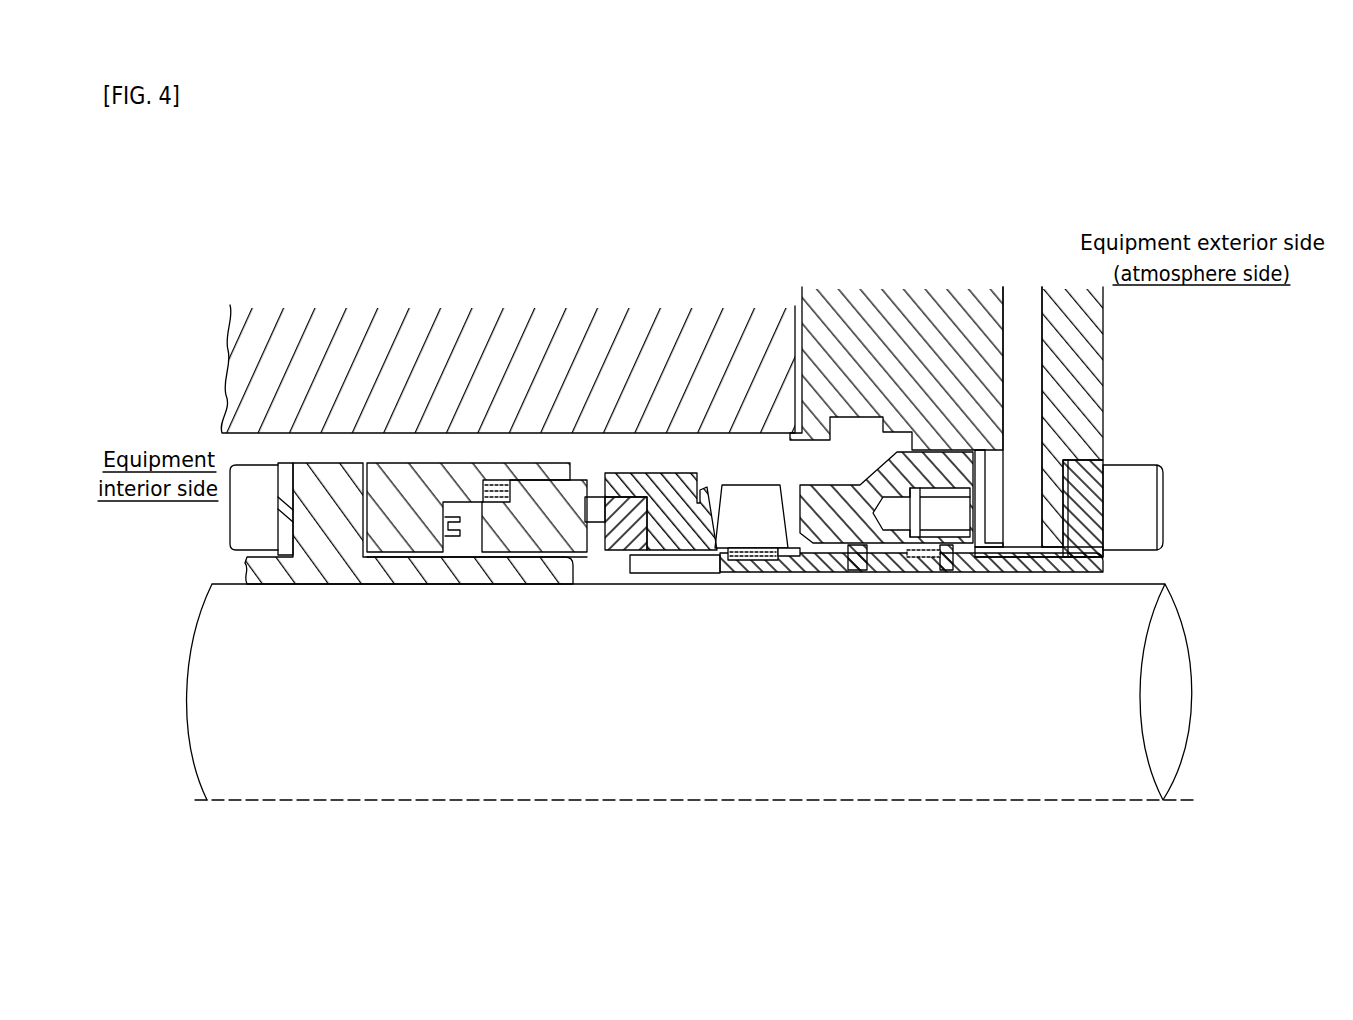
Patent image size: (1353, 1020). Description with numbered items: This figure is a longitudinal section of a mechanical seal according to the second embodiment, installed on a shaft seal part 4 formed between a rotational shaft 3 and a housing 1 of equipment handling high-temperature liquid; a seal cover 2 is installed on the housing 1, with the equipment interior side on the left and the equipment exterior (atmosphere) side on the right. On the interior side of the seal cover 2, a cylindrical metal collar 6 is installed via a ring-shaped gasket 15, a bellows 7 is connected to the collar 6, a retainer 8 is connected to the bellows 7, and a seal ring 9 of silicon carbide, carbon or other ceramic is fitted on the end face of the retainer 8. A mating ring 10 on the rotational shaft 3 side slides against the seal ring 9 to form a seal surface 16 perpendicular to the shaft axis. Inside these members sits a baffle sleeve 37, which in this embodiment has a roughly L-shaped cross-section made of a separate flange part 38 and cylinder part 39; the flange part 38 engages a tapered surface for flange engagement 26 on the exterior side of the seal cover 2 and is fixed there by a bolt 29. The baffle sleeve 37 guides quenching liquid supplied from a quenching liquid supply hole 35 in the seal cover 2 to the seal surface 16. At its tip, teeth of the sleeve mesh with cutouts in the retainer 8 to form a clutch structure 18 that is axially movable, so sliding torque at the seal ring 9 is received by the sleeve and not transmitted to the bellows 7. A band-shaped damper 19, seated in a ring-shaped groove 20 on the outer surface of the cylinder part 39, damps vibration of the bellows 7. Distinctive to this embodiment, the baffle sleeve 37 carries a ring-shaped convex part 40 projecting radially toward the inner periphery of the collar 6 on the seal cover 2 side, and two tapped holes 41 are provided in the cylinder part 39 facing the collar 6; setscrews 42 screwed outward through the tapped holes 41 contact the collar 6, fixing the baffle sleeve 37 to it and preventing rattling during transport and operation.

The housing 1 is at (362, 342).
The seal cover 2 is at (850, 335).
The rotational shaft 3 is at (310, 738).
The shaft seal part 4 is at (597, 471).
The collar 6 is at (870, 487).
The bellows 7 is at (748, 500).
The retainer 8 is at (658, 474).
The seal ring 9 is at (596, 524).
The mating ring 10 is at (368, 584).
The ring-shaped gasket 15 is at (980, 507).
The seal surface 16 is at (560, 528).
The clutch structure 18 is at (668, 573).
The damper 19 is at (743, 562).
The ring-shaped groove 20 is at (808, 558).
The tapered surface for flange engagement 26 is at (1092, 480).
The bolt 29 is at (1150, 507).
The quenching liquid supply hole 35 is at (1022, 328).
The baffle sleeve 37 is at (1018, 585).
The flange part 38 is at (1105, 553).
The cylinder part 39 is at (1050, 557).
The ring-shaped convex part 40 is at (890, 535).
The tapped holes 41 is at (923, 560).
The setscrews 42 is at (860, 570).